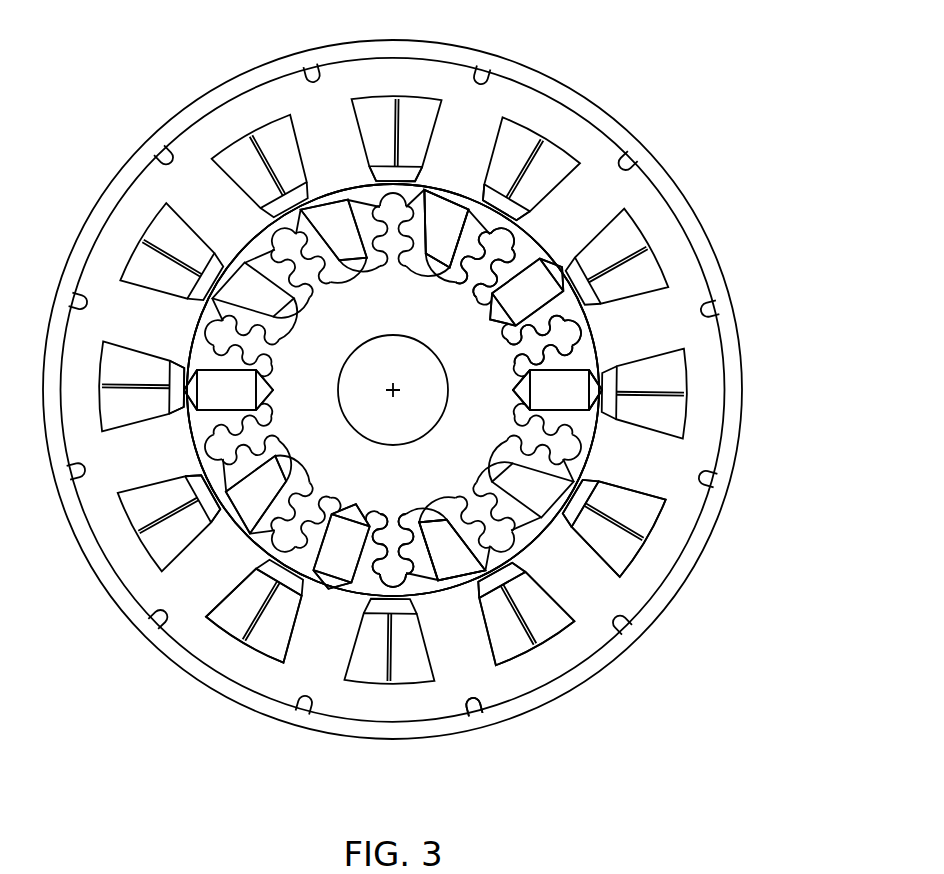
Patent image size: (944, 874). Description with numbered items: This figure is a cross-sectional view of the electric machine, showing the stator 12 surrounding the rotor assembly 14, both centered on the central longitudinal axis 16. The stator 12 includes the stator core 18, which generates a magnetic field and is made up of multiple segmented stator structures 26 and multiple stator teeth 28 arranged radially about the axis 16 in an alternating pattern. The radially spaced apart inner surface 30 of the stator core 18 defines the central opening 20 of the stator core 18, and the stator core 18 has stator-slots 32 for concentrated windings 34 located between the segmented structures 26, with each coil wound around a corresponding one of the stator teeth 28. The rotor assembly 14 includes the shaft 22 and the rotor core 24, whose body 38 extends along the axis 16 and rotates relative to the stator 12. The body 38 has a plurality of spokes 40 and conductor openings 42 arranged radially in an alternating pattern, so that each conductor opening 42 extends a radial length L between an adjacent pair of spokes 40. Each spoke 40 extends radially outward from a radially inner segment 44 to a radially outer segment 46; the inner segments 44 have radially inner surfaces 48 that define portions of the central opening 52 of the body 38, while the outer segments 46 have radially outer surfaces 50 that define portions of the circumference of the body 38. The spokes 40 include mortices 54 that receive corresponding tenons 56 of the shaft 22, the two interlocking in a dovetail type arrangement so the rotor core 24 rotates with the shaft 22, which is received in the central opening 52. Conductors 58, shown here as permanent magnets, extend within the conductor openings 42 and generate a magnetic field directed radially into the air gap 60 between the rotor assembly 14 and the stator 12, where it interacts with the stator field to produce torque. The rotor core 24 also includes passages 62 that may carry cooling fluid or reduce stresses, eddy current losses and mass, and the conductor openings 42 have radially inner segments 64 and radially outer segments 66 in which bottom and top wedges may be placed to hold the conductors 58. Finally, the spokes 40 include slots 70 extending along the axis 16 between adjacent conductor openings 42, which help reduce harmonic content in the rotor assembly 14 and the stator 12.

The stator 12 is at (660, 190).
The rotor assembly 14 is at (403, 600).
The central longitudinal axis 16 is at (393, 400).
The stator core 18 is at (570, 520).
The central opening 20 is at (555, 445).
The shaft 22 is at (461, 417).
The rotor core 24 is at (195, 490).
The segmented stator structures 26 is at (285, 97).
The stator teeth 28 is at (218, 203).
The inner surface 30 is at (210, 300).
The stator-slots 32 is at (240, 580).
The concentrated windings 34 is at (270, 630).
The body 38 is at (567, 287).
The spokes 40 is at (330, 240).
The conductor openings 42 is at (353, 277).
The radially inner segment 44 is at (540, 397).
The radially outer segment 46 is at (600, 402).
The radially inner surfaces 48 is at (545, 335).
The radially outer surfaces 50 is at (645, 560).
The central opening 52 is at (437, 268).
The mortices 54 is at (387, 565).
The tenons 56 is at (432, 707).
The conductors 58 is at (515, 302).
The air gap 60 is at (487, 190).
The passages 62 is at (283, 240).
The radially inner segments 64 is at (430, 505).
The radially outer segments 66 is at (457, 582).
The slots 70 is at (530, 222).
The radial length L is at (432, 262).